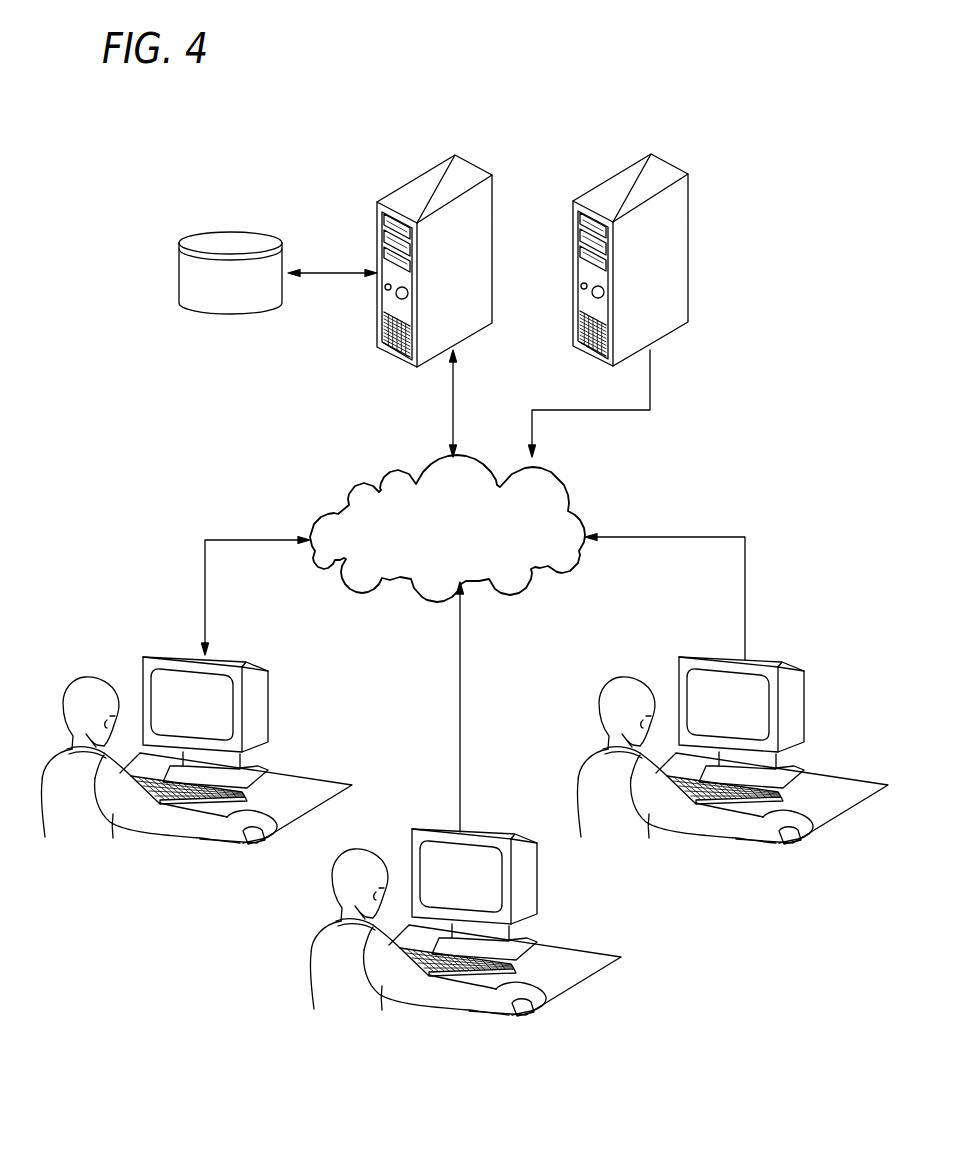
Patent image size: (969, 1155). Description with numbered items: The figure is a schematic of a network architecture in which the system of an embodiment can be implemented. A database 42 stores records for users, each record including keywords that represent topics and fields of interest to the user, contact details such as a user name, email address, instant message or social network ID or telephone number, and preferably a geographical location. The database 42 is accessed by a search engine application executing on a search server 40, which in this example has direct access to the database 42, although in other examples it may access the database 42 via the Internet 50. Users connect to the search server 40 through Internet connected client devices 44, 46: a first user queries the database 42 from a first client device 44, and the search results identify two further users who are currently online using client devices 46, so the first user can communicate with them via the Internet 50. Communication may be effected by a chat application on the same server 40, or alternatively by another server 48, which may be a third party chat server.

The search server 40 is at (413, 173).
The database 42 is at (230, 232).
The first client device 44 is at (270, 702).
The client devices 46 is at (538, 873).
The another server 48 is at (670, 163).
The Internet 50 is at (390, 468).